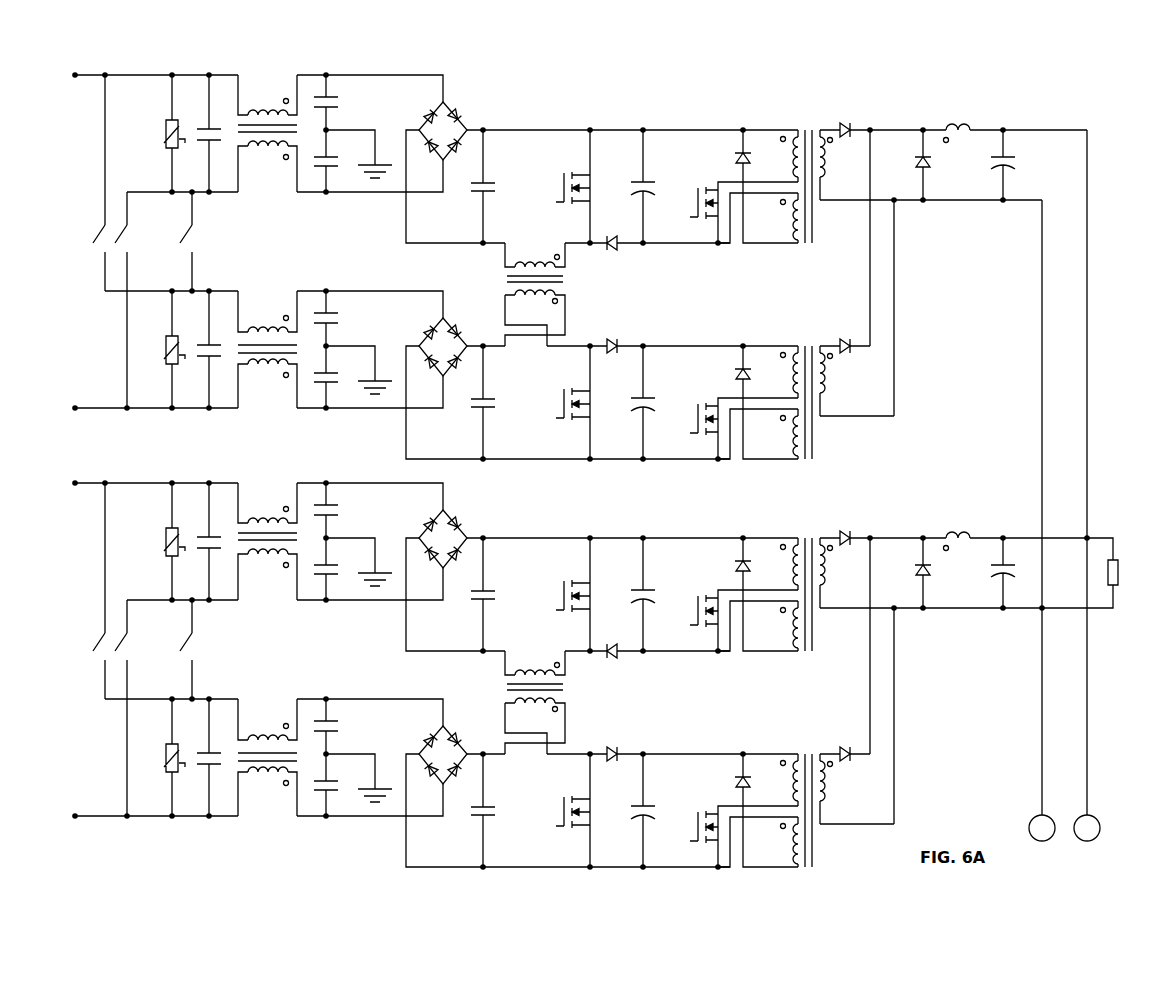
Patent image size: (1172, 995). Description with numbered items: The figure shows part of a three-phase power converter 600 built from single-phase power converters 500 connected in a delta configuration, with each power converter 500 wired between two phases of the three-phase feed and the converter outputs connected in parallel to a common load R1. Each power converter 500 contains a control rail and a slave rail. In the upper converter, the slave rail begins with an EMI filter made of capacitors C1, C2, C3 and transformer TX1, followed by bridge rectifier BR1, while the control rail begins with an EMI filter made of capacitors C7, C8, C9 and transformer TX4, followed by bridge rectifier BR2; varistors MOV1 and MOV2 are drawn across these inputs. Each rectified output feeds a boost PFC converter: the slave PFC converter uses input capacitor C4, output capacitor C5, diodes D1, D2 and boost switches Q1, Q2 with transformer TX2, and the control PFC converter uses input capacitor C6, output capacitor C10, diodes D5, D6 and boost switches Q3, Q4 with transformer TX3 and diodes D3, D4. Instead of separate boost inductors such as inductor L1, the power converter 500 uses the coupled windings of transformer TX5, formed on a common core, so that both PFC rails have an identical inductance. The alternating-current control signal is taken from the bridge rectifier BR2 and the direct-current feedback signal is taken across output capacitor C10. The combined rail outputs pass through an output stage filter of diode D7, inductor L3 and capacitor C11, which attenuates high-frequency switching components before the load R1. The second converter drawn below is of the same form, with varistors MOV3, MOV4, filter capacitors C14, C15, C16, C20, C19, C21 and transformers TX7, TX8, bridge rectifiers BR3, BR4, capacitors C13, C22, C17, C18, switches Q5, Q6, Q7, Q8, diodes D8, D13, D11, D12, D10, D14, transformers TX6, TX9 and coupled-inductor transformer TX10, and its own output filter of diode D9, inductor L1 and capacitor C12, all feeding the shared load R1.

The 3-phase power converter 600 is at (596, 468).
The power converter 500 is at (567, 468).
The metal oxide varistor MOV1 is at (154, 125).
The metal oxide varistor MOV2 is at (157, 340).
The metal oxide varistor MOV3 is at (154, 533).
The metal oxide varistor MOV4 is at (157, 748).
The capacitor C1 is at (216, 125).
The capacitor C2 is at (339, 102).
The capacitor C3 is at (333, 150).
The input capacitor C4 is at (496, 190).
The output capacitor C5 is at (656, 187).
The input capacitor C6 is at (496, 404).
The capacitor C7 is at (214, 339).
The capacitor C8 is at (336, 319).
The capacitor C9 is at (336, 379).
The output capacitor C10 is at (656, 395).
The capacitor C11 is at (992, 165).
The output capacitor C12 is at (992, 573).
The capacitor C13 is at (501, 598).
The capacitor C14 is at (222, 533).
The capacitor C15 is at (344, 510).
The capacitor C16 is at (339, 558).
The capacitor C17 is at (661, 595).
The capacitor C18 is at (656, 803).
The capacitor C19 is at (341, 787).
The capacitor C20 is at (341, 727).
The capacitor C21 is at (219, 747).
The capacitor C22 is at (501, 812).
The transformer TX1 is at (267, 133).
The transformer TX2 is at (810, 176).
The transformer TX3 is at (806, 394).
The transformer TX4 is at (267, 351).
The transformer TX5 is at (518, 294).
The transformer TX6 is at (810, 584).
The transformer TX7 is at (267, 541).
The transformer TX8 is at (267, 759).
The transformer TX9 is at (806, 802).
The transformer TX10 is at (518, 702).
The bridge rectifier BR1 is at (459, 131).
The bridge rectifier BR2 is at (457, 347).
The bridge rectifier BR3 is at (459, 539).
The bridge rectifier BR4 is at (457, 755).
The boost switch Q1 is at (573, 204).
The boost switch Q2 is at (704, 216).
The boost switch Q3 is at (573, 422).
The boost switch Q4 is at (704, 431).
The transistor Q5 is at (573, 612).
The transistor Q6 is at (704, 624).
The transistor Q7 is at (704, 839).
The transistor Q8 is at (573, 830).
The diode D1 is at (616, 231).
The diode D2 is at (732, 159).
The diode D3 is at (846, 116).
The diode D4 is at (846, 335).
The diode D5 is at (614, 334).
The diode D6 is at (731, 369).
The diode D7 is at (914, 165).
The diode D8 is at (616, 639).
The diode D9 is at (914, 573).
The diode D10 is at (851, 524).
The diode D11 is at (732, 567).
The diode D12 is at (731, 777).
The diode D13 is at (619, 742).
The diode D14 is at (851, 743).
The inductor L1 is at (959, 549).
The inductor L3 is at (958, 140).
The load R1 is at (1126, 572).